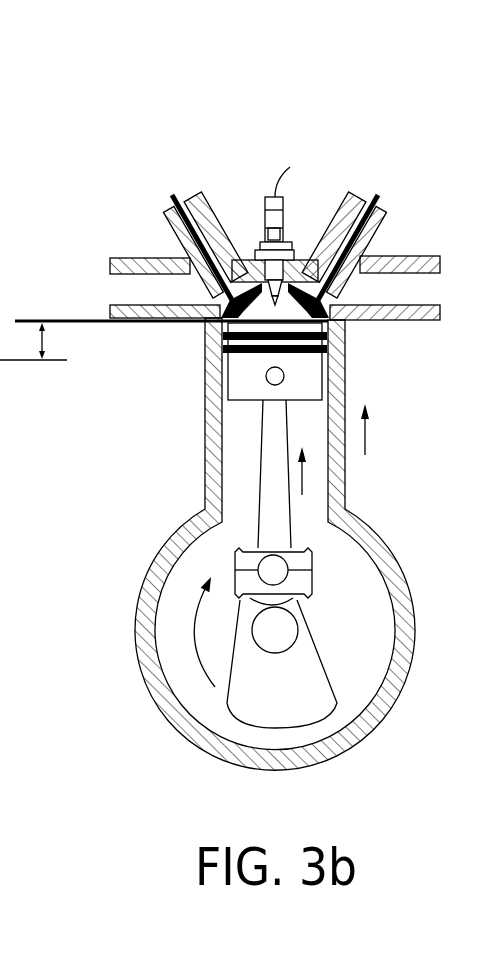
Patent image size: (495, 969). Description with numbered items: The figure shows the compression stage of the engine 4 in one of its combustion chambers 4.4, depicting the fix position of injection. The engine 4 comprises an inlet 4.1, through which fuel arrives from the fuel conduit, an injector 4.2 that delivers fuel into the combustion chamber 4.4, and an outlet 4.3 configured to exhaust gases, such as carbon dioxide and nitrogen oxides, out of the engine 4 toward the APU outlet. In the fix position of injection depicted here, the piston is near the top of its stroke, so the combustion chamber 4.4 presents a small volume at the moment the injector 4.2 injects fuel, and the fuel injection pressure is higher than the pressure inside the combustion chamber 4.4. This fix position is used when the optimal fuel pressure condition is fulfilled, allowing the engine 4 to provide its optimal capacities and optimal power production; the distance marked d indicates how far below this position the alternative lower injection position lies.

The engine 4 is at (340, 149).
The inlet 4.1 is at (127, 287).
The injector 4.2 is at (268, 193).
The outlet 4.3 is at (402, 283).
The combustion chamber 4.4 is at (330, 325).